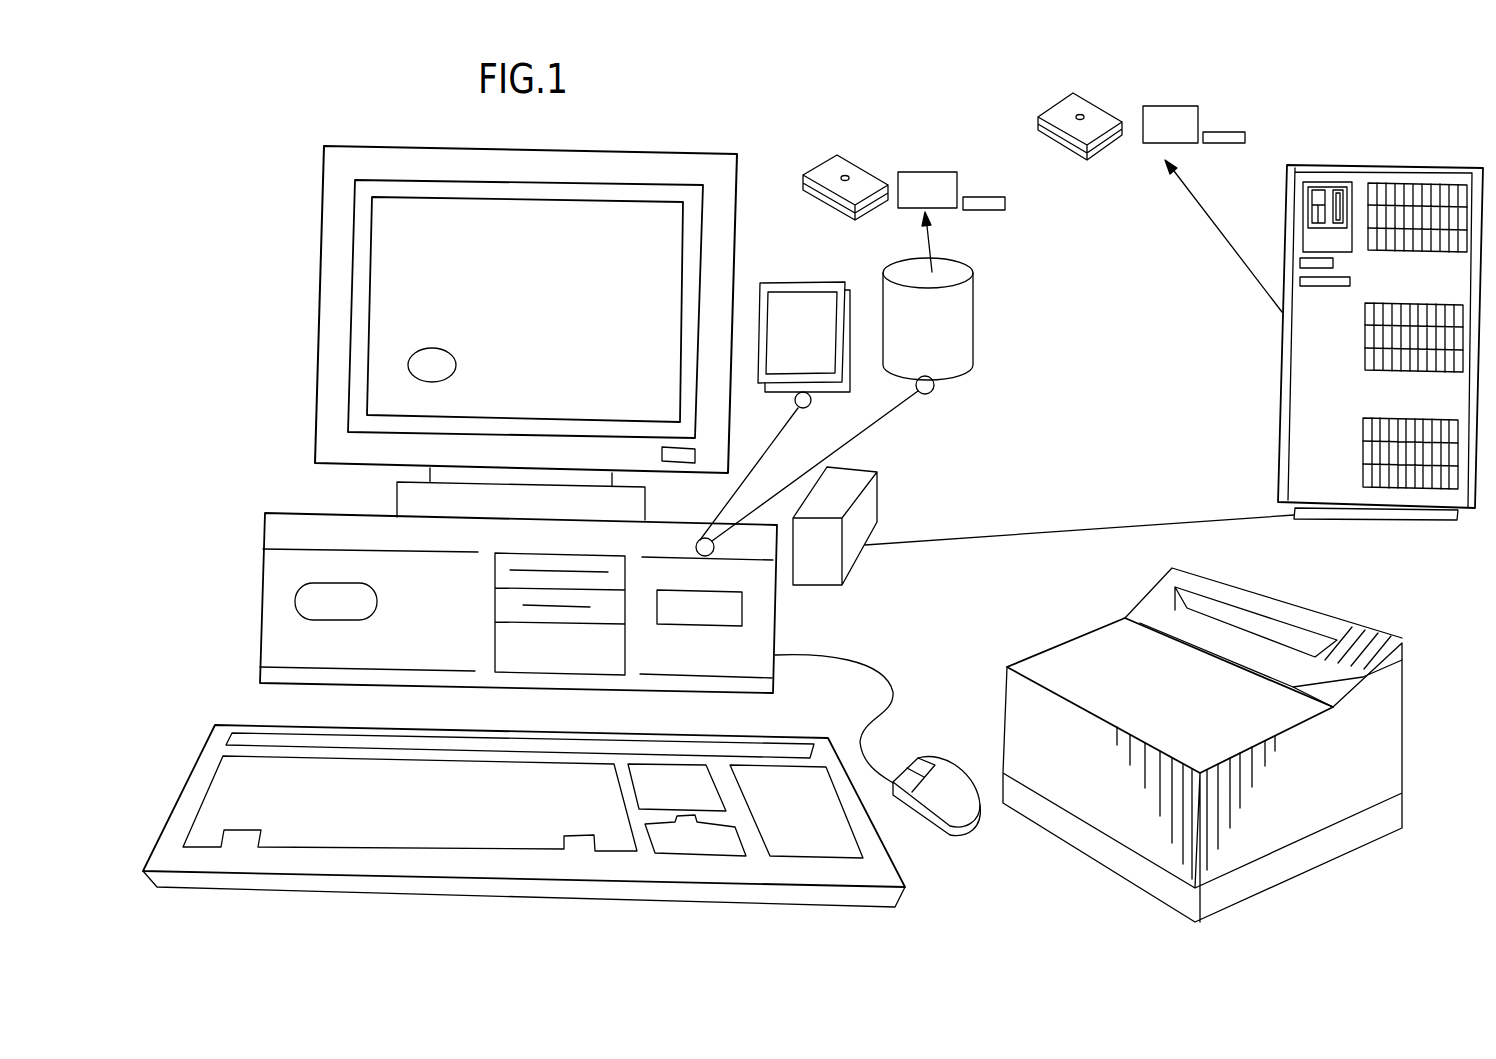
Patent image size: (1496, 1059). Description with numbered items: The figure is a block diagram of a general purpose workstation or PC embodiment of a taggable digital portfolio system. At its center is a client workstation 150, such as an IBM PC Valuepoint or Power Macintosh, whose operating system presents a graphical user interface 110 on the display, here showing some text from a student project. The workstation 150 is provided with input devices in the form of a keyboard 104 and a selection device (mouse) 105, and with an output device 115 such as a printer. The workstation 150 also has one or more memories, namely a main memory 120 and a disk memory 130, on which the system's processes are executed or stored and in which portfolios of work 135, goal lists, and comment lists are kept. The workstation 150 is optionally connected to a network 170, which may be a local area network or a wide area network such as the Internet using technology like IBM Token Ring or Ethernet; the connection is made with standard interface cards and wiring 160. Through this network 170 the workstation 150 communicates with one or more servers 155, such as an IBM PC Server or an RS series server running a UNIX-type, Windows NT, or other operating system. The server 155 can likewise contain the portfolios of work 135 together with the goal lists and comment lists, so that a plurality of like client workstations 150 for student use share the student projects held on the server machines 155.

The keyboard 104 is at (229, 708).
The selection device (mouse) 105 is at (960, 808).
The graphical user interface 110 is at (583, 393).
The output device 115 is at (1064, 630).
The main memory 120 is at (802, 268).
The disk memory 130 is at (986, 334).
The portfolios of work 135 is at (1016, 108).
The client workstation 150 is at (293, 370).
The server 155 is at (1325, 165).
The interface cards and wiring 160 is at (813, 585).
The network 170 is at (1077, 530).